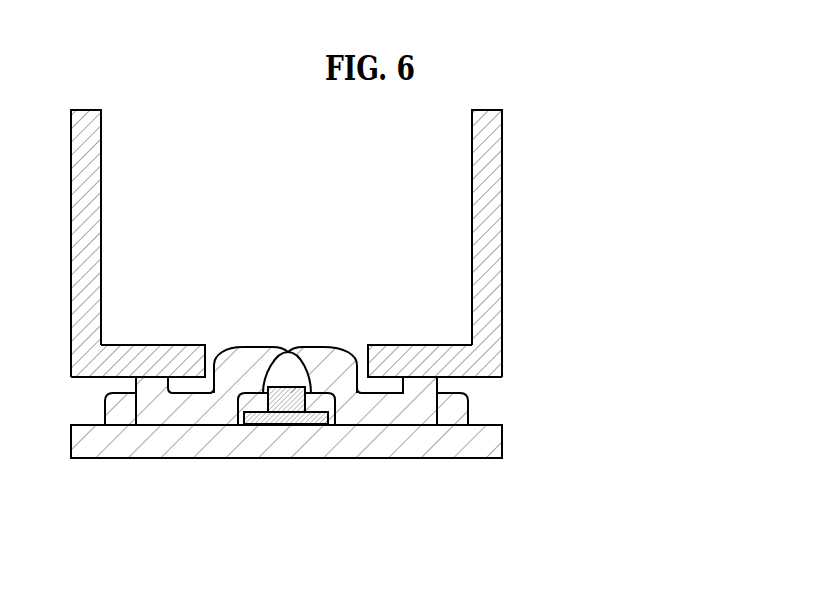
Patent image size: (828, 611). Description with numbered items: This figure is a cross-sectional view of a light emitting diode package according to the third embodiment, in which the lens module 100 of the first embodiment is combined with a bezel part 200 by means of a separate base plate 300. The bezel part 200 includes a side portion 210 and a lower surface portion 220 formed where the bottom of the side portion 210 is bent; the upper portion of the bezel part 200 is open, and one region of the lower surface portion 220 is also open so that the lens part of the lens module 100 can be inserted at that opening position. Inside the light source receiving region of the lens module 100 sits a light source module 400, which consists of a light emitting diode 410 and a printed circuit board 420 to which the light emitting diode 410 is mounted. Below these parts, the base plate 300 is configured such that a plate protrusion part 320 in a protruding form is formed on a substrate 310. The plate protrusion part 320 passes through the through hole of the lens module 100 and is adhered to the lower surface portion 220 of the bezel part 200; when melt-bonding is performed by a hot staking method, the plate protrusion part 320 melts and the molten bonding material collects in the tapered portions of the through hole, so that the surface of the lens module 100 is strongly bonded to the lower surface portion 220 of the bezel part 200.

The lens module 100 is at (217, 413).
The bezel part 200 is at (368, 245).
The side portion 210 is at (485, 305).
The lower surface portion 220 is at (449, 362).
The base plate 300 is at (368, 426).
The substrate 310 is at (485, 440).
The plate protrusion part 320 is at (432, 389).
The light source module 400 is at (285, 341).
The light emitting diode 410 is at (287, 386).
The printed circuit board 420 is at (315, 418).